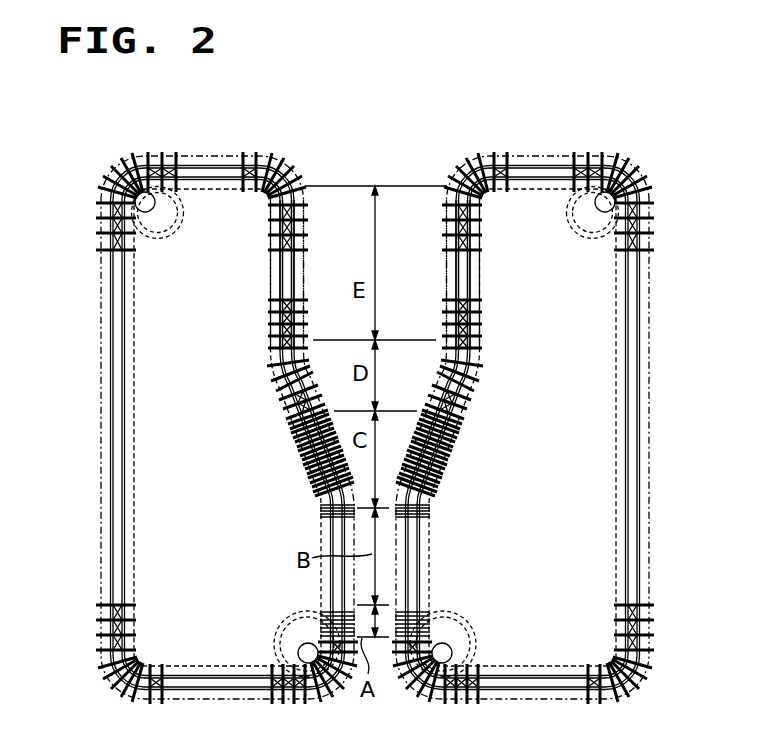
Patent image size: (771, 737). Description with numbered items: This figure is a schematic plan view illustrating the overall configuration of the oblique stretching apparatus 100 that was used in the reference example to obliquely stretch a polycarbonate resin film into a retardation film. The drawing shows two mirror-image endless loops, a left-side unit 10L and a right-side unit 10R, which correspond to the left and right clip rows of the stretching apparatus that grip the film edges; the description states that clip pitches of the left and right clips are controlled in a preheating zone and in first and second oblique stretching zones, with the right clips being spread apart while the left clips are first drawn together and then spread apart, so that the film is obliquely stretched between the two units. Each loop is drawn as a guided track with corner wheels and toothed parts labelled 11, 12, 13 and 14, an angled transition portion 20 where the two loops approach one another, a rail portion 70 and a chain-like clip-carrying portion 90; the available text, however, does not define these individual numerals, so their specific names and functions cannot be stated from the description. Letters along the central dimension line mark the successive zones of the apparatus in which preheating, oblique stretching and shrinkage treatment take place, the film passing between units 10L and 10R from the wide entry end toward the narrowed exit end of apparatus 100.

The conveyor transport system 100 is at (413, 132).
The left conveyor unit 10L is at (100, 378).
The right conveyor unit 10R is at (650, 378).
The lower sprocket 11 is at (298, 618).
The upper sprocket 12 is at (160, 240).
The lower gear 13 is at (274, 640).
The upper gear 14 is at (180, 231).
The bent portion 20 is at (290, 392).
The guide rail 70 is at (303, 258).
The conveyor chain 90 is at (271, 293).